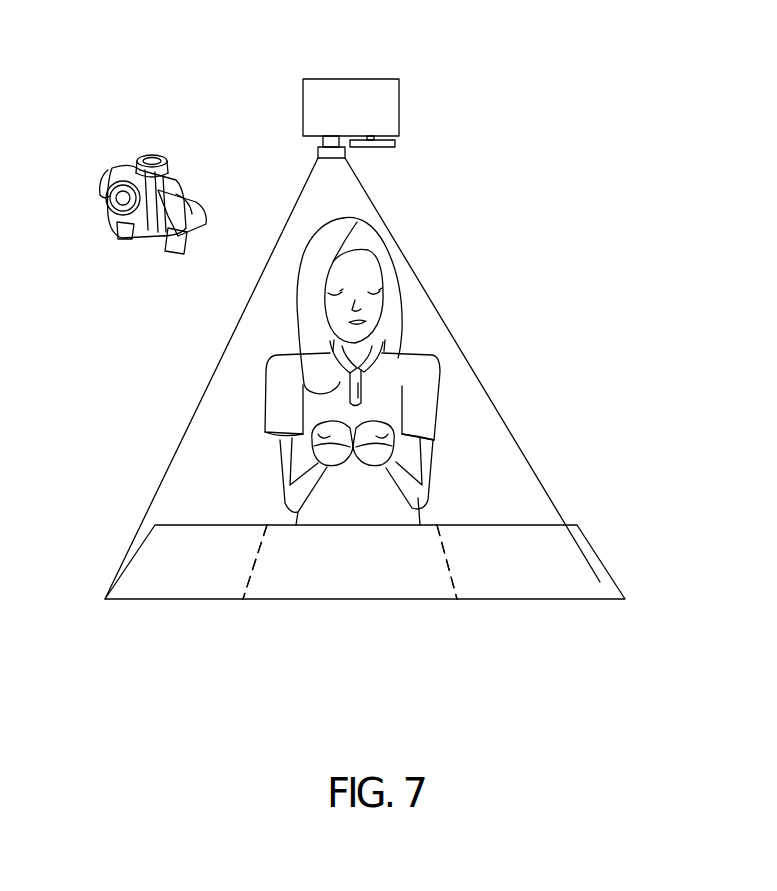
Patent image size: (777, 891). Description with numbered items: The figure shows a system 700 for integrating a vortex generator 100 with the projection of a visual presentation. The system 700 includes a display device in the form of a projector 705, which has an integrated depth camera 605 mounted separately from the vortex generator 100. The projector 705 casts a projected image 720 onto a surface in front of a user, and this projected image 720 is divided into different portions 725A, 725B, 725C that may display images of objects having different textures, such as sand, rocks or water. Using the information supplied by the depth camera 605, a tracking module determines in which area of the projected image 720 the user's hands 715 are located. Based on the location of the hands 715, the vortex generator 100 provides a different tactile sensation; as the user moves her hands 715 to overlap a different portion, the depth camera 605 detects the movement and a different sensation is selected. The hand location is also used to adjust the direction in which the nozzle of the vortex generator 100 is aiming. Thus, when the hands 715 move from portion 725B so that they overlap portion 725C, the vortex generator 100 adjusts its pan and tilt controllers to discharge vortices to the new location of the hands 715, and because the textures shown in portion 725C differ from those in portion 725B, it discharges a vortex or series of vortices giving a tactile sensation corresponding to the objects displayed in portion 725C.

The system 700 is at (184, 58).
The projector 705 is at (399, 103).
The depth camera 605 is at (396, 143).
The vortex generator 100 is at (127, 236).
The user's hands 715 is at (388, 424).
The projected image 720 is at (600, 553).
The portion of projected image 725A is at (213, 576).
The portion of projected image 725B is at (381, 576).
The portion of projected image 725C is at (553, 576).